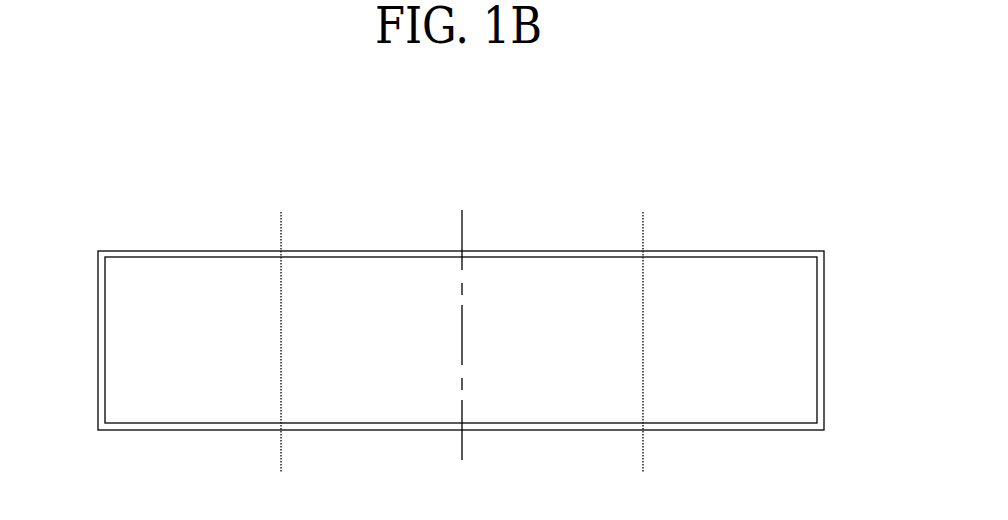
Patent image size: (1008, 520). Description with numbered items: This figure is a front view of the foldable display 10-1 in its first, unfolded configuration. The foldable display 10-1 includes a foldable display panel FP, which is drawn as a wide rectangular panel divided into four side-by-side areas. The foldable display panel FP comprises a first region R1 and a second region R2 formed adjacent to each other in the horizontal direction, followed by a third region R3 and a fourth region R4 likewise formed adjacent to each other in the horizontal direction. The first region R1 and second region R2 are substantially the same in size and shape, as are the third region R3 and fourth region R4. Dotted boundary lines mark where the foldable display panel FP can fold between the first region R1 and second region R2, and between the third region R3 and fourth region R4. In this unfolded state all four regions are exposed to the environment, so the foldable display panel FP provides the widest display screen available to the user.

The foldable display 10-1 is at (778, 160).
The foldable display panel FP is at (735, 425).
The first region R1 is at (193, 340).
The second region R2 is at (371, 340).
The third region R3 is at (552, 340).
The fourth region R4 is at (730, 340).